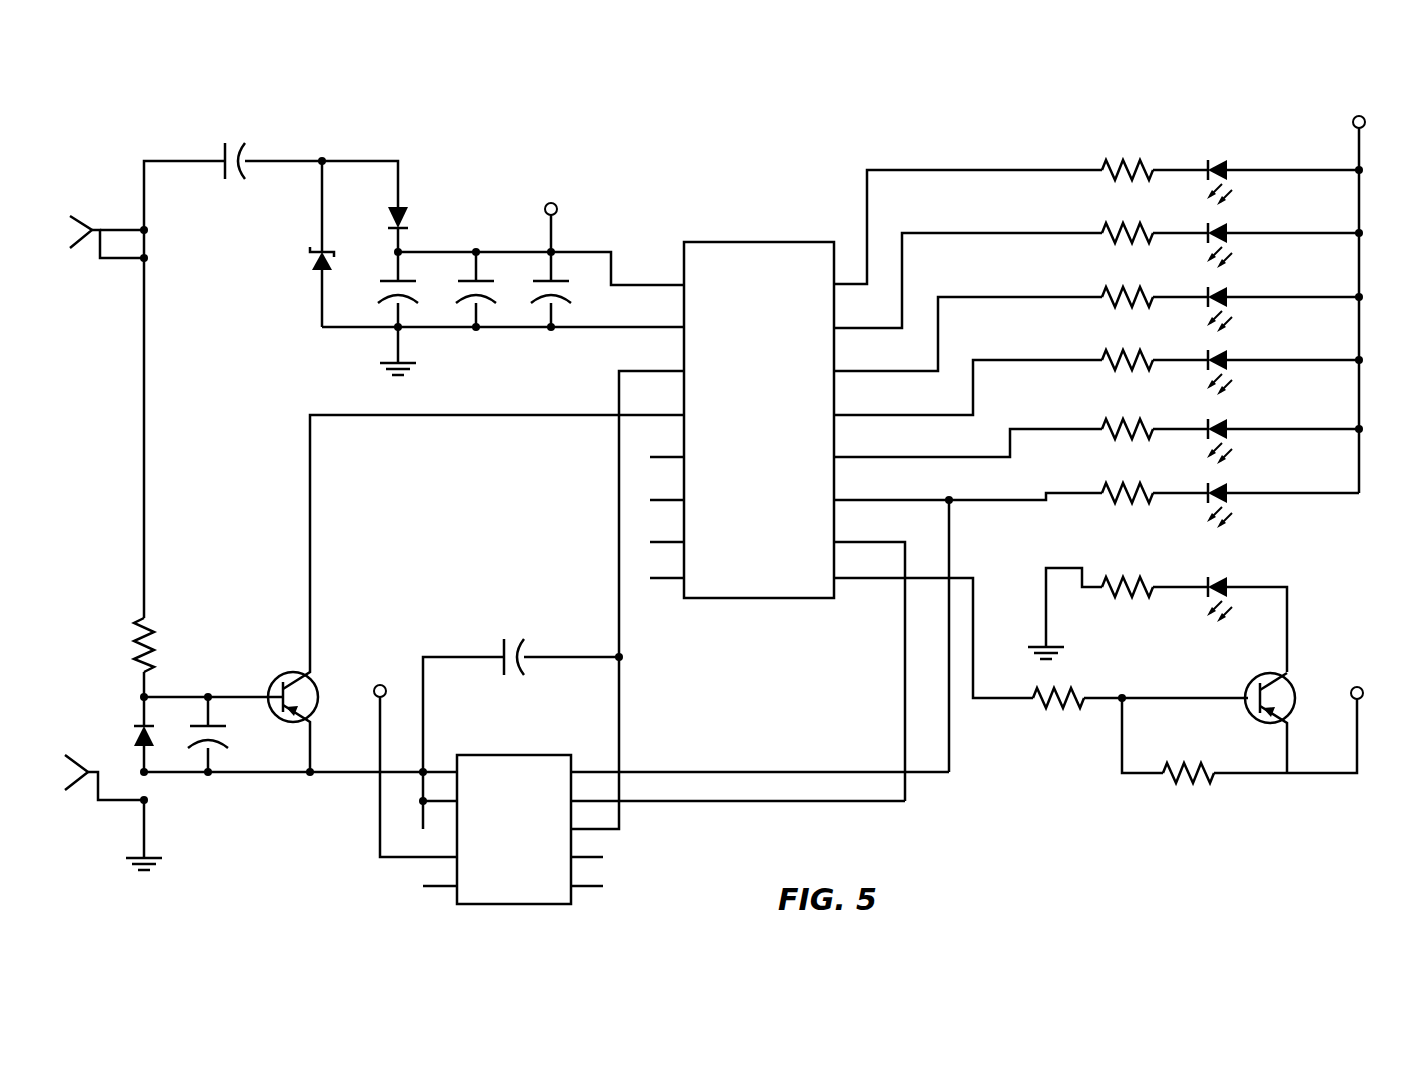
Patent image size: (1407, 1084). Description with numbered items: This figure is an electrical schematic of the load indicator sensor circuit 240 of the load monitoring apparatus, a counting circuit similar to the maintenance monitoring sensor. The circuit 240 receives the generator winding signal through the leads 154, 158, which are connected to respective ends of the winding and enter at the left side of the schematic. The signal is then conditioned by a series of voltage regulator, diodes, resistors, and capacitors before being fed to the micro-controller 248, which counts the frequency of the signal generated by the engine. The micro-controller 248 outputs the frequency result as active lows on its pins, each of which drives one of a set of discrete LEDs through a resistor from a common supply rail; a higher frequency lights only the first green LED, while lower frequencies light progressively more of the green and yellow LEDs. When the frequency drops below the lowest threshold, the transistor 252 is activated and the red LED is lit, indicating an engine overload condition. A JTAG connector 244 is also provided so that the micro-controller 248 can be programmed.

The lead 154 is at (97, 228).
The lead 158 is at (92, 768).
The load indicator sensor circuit 240 is at (699, 122).
The JTAG connector 244 is at (488, 755).
The micro-controller 248 is at (730, 242).
The transistor 252 is at (1305, 660).